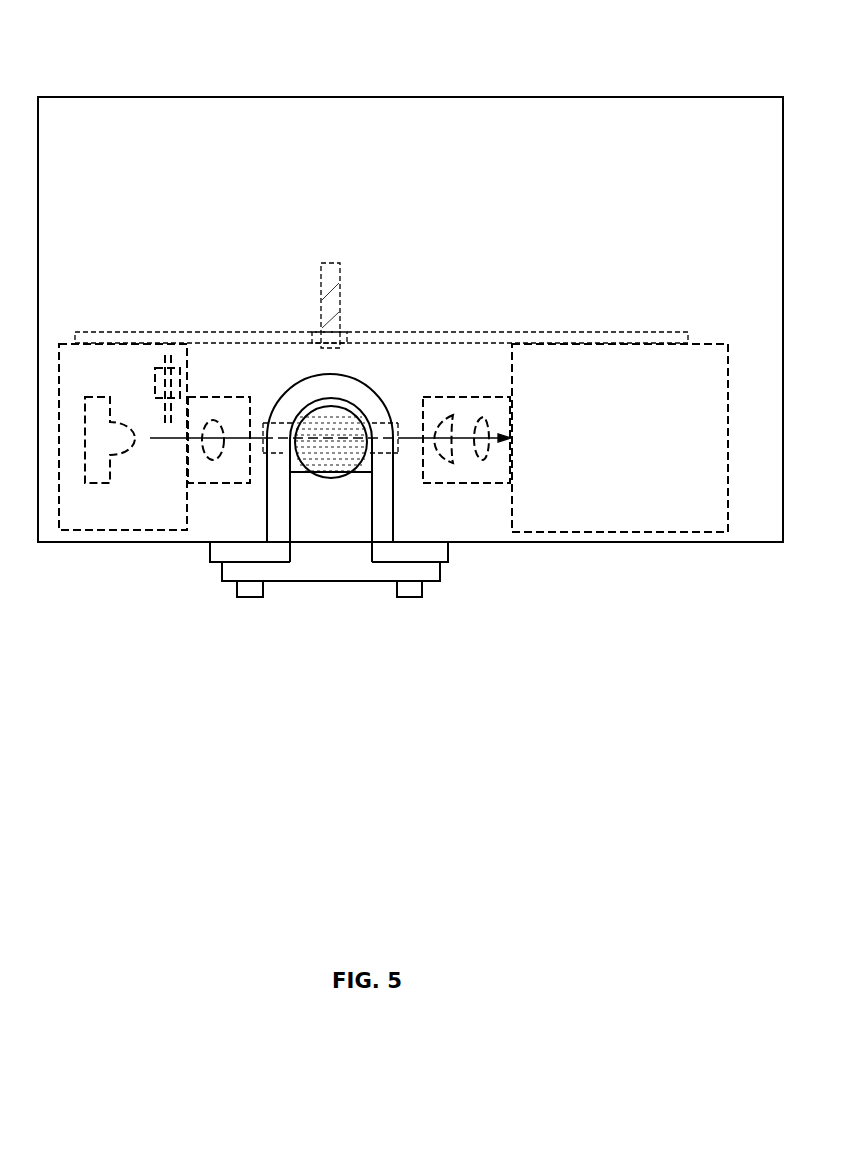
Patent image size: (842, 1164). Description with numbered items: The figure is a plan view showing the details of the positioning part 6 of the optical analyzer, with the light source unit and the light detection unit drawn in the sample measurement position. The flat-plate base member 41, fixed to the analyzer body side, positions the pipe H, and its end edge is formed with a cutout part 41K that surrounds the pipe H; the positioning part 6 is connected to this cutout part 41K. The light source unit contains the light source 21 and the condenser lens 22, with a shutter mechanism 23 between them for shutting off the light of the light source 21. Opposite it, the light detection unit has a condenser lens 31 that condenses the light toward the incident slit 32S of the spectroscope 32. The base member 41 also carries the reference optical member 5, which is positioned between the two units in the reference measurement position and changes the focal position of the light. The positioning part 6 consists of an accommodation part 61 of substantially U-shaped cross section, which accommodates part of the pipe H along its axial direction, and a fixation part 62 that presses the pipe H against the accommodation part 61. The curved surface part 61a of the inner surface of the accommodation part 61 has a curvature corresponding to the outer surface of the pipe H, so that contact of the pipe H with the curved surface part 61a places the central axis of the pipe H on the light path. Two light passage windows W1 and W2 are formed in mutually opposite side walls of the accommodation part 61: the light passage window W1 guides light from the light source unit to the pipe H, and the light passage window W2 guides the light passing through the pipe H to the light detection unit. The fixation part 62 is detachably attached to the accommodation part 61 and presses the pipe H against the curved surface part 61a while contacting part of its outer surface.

The base member 41 is at (446, 97).
The cutout part 41K is at (270, 477).
The reference optical member 5 is at (330, 262).
The light source 21 is at (130, 452).
The condenser lens 22 is at (216, 462).
The shutter mechanism 23 is at (148, 380).
The light passage window W1 is at (260, 428).
The light passage window W2 is at (398, 428).
The condenser lens 31 is at (481, 412).
The spectroscope 32 is at (697, 534).
The incident slit 32S is at (528, 439).
The positioning part 6 is at (373, 516).
The accommodation part 61 is at (387, 505).
The curved surface part 61a is at (308, 405).
The fixation part 62 is at (340, 582).
The pipe H is at (362, 473).